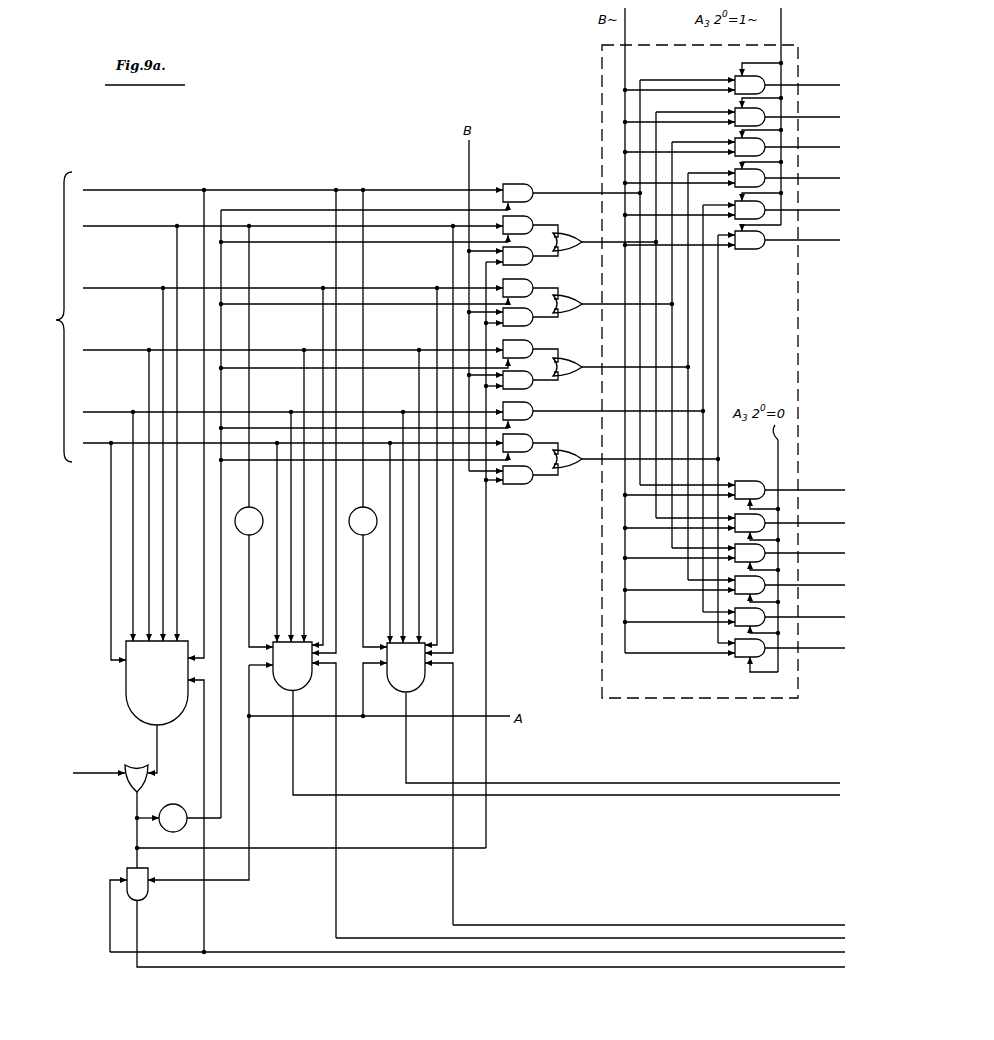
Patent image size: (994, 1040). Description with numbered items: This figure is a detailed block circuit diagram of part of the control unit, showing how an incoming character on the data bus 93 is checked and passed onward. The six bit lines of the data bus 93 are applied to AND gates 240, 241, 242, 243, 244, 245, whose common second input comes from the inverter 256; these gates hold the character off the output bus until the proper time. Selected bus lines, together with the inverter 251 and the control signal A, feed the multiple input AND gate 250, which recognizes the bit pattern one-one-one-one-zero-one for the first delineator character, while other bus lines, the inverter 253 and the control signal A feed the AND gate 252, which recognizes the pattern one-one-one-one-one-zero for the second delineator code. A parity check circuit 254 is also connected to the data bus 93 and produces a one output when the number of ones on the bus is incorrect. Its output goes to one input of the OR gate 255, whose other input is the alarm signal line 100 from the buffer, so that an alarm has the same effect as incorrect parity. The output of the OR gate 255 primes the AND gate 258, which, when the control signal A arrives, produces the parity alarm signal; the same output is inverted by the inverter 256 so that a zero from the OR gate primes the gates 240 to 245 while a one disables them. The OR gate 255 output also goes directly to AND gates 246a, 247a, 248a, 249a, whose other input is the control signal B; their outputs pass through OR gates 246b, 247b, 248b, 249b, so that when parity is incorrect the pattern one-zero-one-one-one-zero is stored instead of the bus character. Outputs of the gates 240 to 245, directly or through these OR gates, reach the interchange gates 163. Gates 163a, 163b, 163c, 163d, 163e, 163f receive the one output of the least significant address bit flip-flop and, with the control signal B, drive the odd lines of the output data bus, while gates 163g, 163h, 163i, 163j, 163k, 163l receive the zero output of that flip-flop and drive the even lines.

The data bus 93 is at (260, 316).
The alarm signal line 100 is at (86, 773).
The interchange gates 163 is at (788, 362).
The interchange gate 163a is at (737, 77).
The interchange gate 163b is at (737, 109).
The interchange gate 163c is at (736, 137).
The interchange gate 163d is at (737, 171).
The interchange gate 163e is at (737, 203).
The interchange gate 163f is at (766, 264).
The interchange gate 163g is at (745, 472).
The interchange gate 163h is at (768, 515).
The interchange gate 163i is at (768, 546).
The interchange gate 163j is at (768, 578).
The interchange gate 163k is at (768, 610).
The interchange gate 163l is at (768, 642).
The AND gate 240 is at (513, 185).
The AND gate 241 is at (532, 218).
The AND gate 242 is at (532, 281).
The AND gate 243 is at (532, 343).
The AND gate 244 is at (532, 405).
The AND gate 245 is at (532, 437).
The AND gate 246a is at (512, 253).
The OR gate 246b is at (574, 229).
The AND gate 247a is at (512, 314).
The OR gate 247b is at (571, 298).
The AND gate 248a is at (512, 377).
The OR gate 248b is at (572, 360).
The AND gate 249a is at (540, 492).
The OR gate 249b is at (575, 469).
The AND gate 250 is at (289, 694).
The inverter 251 is at (238, 534).
The AND gate 252 is at (401, 695).
The inverter 253 is at (352, 534).
The parity check circuit 254 is at (126, 688).
The OR gate 255 is at (122, 785).
The inverter 256 is at (168, 804).
The AND gate 258 is at (148, 896).